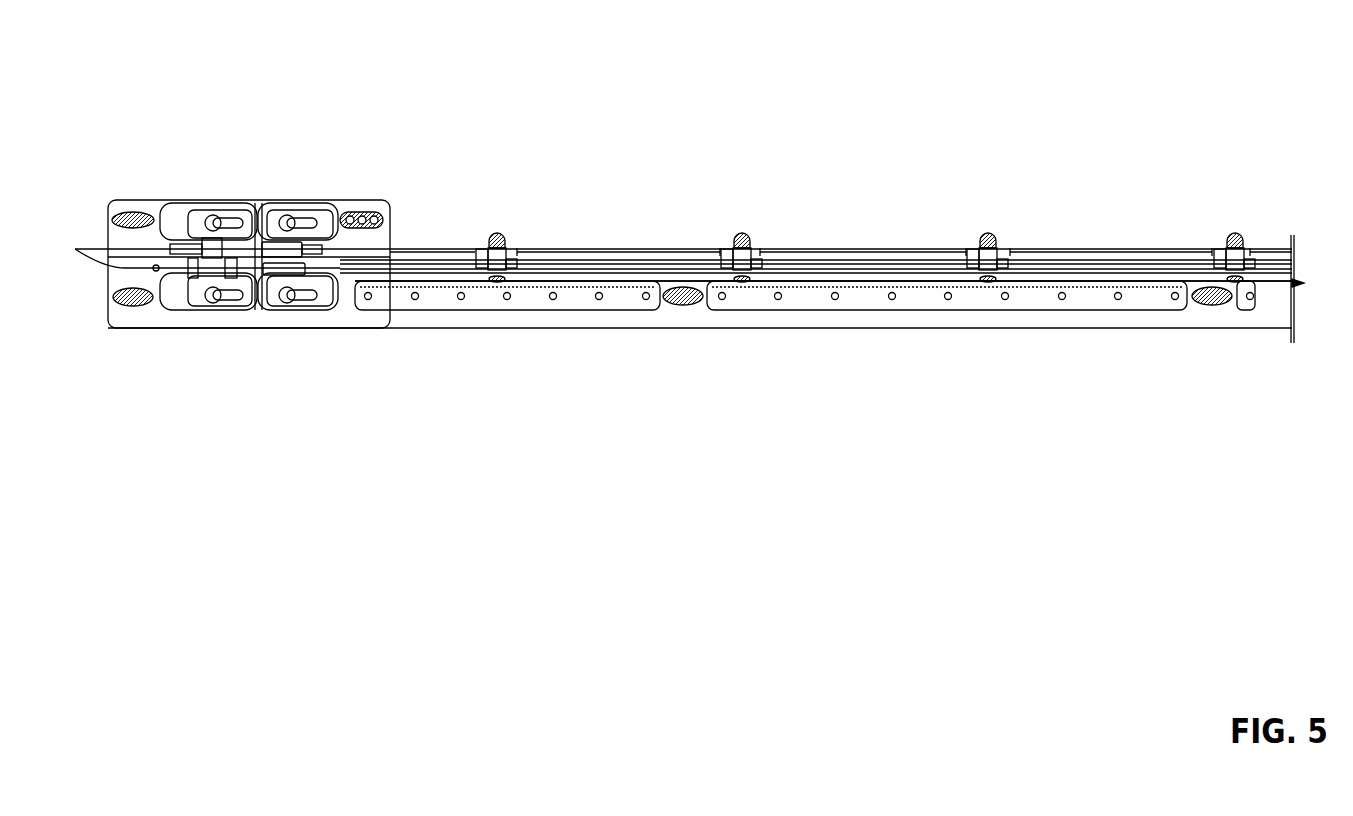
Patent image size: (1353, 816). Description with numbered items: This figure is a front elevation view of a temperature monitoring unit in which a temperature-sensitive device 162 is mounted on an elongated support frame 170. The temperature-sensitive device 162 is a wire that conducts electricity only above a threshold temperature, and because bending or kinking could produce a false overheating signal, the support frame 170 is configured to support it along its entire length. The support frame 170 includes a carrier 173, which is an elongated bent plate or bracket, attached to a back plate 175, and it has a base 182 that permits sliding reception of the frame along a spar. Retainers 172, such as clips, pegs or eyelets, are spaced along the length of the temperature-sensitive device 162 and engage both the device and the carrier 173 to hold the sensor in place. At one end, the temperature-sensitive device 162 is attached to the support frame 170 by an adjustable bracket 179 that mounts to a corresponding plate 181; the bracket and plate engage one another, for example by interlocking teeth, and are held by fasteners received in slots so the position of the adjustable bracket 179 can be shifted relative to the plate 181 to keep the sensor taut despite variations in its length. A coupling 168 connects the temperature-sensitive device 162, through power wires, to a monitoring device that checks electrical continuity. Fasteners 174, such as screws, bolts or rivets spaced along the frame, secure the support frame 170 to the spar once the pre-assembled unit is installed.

The temperature-sensitive device 162 is at (818, 262).
The coupling 168 is at (212, 258).
The support frame 170 is at (487, 350).
The retainer 172 is at (727, 255).
The carrier 173 is at (540, 310).
The fastener 174 is at (135, 220).
The back plate 175 is at (922, 318).
The adjustable bracket 179 is at (233, 215).
The plate 181 is at (185, 203).
The base 182 is at (337, 173).